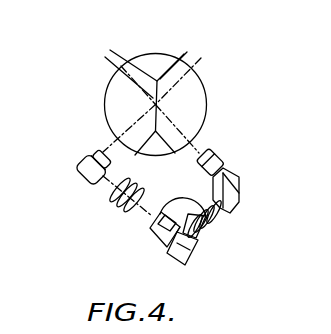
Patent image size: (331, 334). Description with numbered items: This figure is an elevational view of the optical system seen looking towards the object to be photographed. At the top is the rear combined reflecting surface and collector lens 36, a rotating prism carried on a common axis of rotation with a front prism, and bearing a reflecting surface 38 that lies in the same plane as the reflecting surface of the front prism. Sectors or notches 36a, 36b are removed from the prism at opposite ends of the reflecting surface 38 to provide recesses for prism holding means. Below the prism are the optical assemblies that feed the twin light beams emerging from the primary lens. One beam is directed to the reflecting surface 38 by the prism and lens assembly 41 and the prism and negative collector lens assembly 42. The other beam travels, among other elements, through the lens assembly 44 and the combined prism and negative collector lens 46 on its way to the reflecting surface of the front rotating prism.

The rear combined reflecting surface and collector lens 36 is at (117, 92).
The sector or notch 36a is at (156, 63).
The sector or notch 36b is at (175, 155).
The reflecting surface 38 is at (110, 52).
The prism and lens assembly 41 is at (184, 252).
The prism and negative collector lens assembly 42 is at (228, 172).
The lens assembly 44 is at (133, 190).
The combined prism and negative collector lens 46 is at (87, 163).